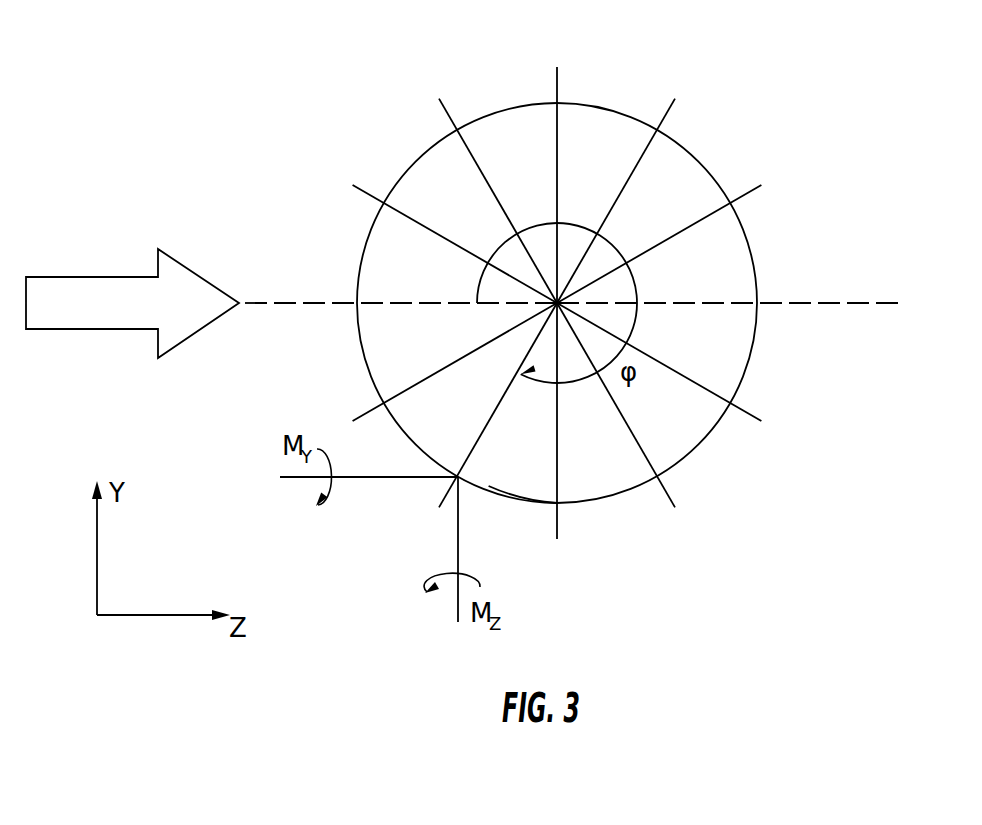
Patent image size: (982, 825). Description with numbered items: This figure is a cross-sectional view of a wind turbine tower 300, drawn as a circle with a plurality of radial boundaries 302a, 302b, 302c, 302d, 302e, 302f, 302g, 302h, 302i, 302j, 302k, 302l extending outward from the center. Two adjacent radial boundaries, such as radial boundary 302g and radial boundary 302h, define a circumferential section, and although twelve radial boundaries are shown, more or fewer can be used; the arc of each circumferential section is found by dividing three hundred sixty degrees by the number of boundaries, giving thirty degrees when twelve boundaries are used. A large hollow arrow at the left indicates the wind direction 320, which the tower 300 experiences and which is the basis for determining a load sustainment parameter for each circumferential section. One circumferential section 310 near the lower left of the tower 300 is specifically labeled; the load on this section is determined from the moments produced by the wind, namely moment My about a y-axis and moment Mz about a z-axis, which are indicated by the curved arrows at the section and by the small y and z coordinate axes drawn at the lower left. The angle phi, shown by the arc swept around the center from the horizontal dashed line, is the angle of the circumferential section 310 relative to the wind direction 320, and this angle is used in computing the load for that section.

The wind turbine tower 300 is at (613, 111).
The radial boundary 302a is at (559, 85).
The radial boundary 302b is at (674, 103).
The radial boundary 302c is at (748, 194).
The radial boundary 302d is at (807, 305).
The radial boundary 302e is at (748, 408).
The radial boundary 302f is at (672, 504).
The radial boundary 302g is at (559, 528).
The radial boundary 302h is at (504, 398).
The radial boundary 302i is at (425, 378).
The radial boundary 302j is at (312, 302).
The radial boundary 302k is at (368, 190).
The radial boundary 302l is at (449, 106).
The circumferential section 310 is at (518, 484).
The wind direction 320 is at (96, 285).